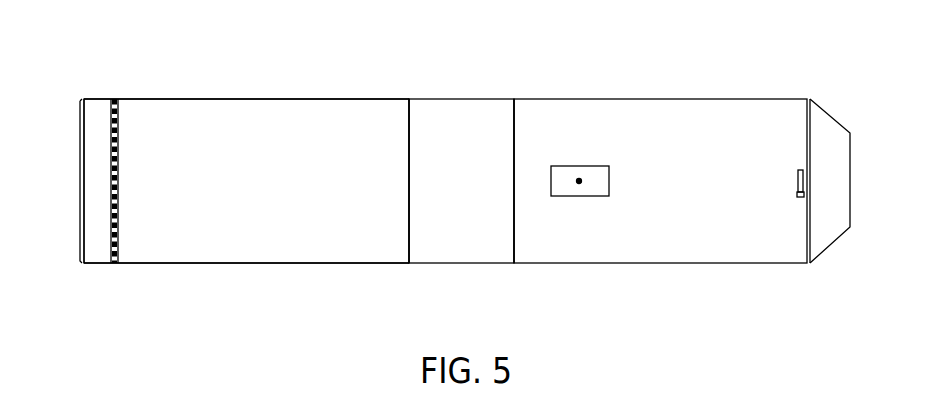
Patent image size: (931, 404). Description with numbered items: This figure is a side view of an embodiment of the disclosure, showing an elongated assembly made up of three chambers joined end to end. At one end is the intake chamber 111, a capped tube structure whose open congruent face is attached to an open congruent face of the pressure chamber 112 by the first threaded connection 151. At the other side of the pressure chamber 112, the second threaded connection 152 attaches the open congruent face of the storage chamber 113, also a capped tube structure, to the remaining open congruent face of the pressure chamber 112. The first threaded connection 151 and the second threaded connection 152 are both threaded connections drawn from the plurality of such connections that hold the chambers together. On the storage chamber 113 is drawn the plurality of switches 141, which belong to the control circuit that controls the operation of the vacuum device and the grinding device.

The intake chamber 111 is at (295, 127).
The first threaded connection 151 is at (405, 118).
The pressure chamber 112 is at (456, 116).
The second threaded connection 152 is at (514, 121).
The storage chamber 113 is at (692, 137).
The plurality of switches 141 is at (582, 172).